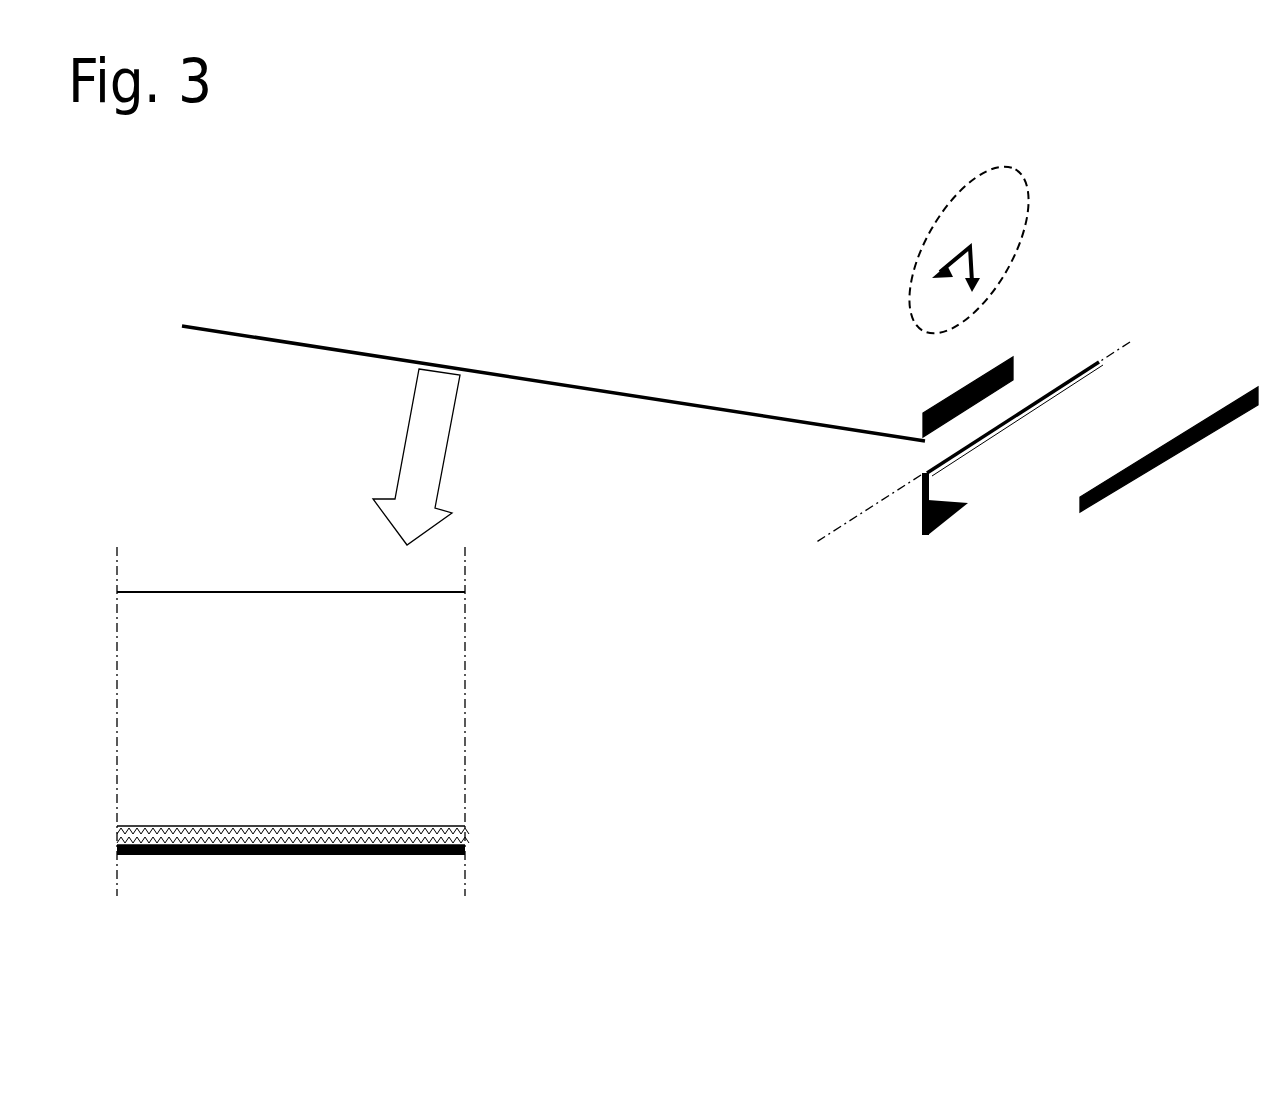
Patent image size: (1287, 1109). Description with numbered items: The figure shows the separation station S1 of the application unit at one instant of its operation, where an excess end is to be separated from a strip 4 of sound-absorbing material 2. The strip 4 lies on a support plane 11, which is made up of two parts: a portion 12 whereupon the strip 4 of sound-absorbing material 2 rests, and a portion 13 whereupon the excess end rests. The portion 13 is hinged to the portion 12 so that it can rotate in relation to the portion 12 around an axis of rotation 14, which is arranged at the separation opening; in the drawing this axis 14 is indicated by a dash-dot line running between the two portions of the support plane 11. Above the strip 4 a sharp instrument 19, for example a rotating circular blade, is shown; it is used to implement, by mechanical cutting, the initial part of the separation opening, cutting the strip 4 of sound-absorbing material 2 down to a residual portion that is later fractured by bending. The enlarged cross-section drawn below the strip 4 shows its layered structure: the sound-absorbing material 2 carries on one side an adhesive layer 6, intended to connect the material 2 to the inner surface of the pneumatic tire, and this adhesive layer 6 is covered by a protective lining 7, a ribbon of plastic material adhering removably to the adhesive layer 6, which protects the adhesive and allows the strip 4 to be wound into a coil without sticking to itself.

The sound-absorbing material 2 is at (700, 332).
The strip 4 is at (541, 183).
The adhesive layer 6 is at (144, 834).
The protective lining 7 is at (429, 855).
The support plane 11 is at (551, 503).
The portion of the support plane 12 is at (153, 383).
The portion of the support plane 13 is at (1151, 398).
The axis of rotation 14 is at (830, 535).
The sharp instrument 19 is at (965, 205).
The separation station S1 is at (1018, 802).